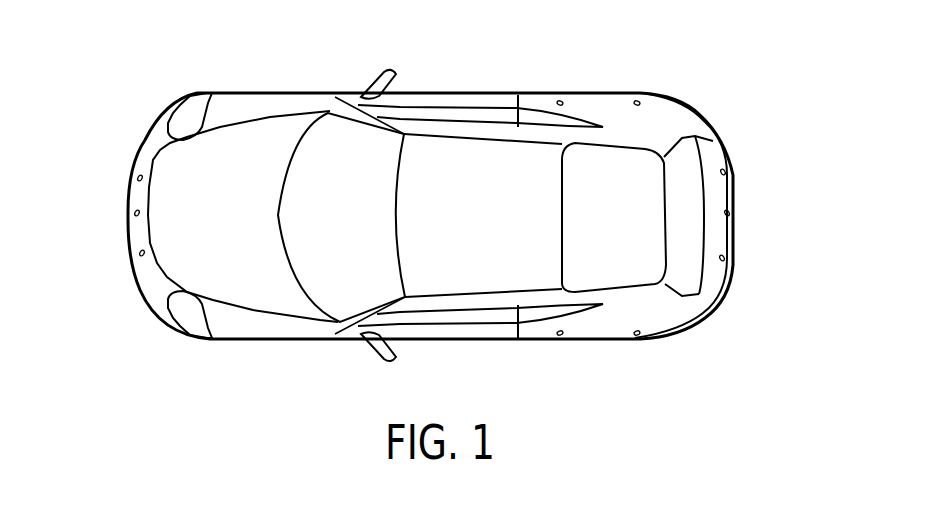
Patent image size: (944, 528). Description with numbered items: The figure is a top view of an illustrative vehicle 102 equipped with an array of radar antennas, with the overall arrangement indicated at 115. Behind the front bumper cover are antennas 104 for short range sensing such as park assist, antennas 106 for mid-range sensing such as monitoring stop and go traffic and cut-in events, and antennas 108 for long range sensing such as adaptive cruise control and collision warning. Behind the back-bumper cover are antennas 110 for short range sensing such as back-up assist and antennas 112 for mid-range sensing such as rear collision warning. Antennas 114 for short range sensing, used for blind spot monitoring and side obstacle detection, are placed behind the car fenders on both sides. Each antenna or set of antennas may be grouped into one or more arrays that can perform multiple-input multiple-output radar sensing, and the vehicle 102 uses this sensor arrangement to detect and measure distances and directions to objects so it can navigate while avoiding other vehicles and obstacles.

The vehicle 102 is at (305, 341).
The antennas for short range sensing 104 is at (130, 237).
The antennas for mid-range sensing 106 is at (130, 232).
The antennas for long range sensing 108 is at (130, 219).
The antennas for short range sensing 110 is at (733, 223).
The antennas for mid-range sensing 112 is at (730, 213).
The antennas for short range sensing 114 is at (563, 101).
The sensor system 115 is at (722, 35).